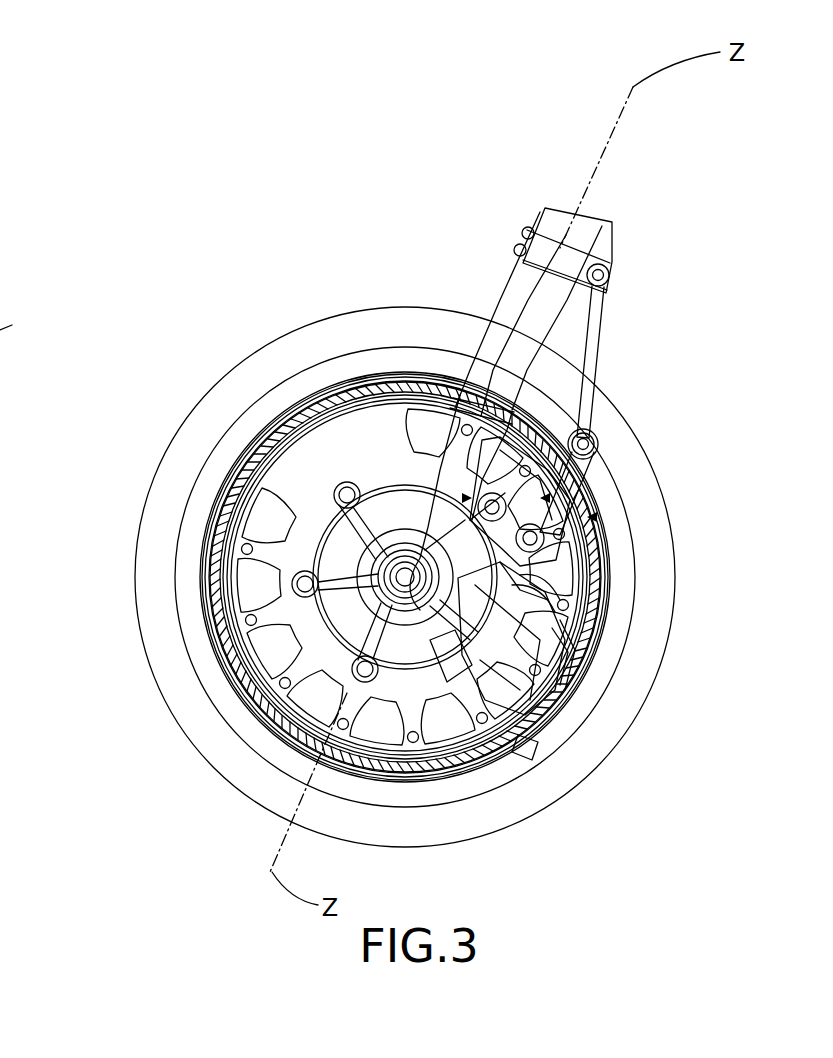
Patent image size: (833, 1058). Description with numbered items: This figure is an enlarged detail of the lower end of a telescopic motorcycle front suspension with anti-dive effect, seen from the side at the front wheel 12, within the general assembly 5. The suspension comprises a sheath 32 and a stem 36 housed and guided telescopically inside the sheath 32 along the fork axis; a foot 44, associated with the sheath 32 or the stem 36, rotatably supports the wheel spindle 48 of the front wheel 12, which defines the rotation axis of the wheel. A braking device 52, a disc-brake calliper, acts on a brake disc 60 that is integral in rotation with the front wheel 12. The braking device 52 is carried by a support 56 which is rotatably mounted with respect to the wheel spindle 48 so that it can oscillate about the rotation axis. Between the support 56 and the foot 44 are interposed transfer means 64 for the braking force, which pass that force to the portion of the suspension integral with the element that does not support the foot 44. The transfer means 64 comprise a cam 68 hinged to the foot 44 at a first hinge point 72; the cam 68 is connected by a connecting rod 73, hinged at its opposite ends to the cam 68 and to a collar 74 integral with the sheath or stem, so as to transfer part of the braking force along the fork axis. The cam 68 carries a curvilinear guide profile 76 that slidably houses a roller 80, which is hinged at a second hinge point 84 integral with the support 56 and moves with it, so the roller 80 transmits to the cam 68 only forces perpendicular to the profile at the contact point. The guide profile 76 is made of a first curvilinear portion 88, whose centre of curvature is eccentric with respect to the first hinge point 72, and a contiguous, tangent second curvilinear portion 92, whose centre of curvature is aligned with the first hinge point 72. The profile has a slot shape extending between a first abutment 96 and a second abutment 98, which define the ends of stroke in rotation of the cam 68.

The front wheel assembly 5 is at (6, 308).
The front wheel 12 is at (257, 783).
The sheath 32 is at (523, 287).
The stem 36 is at (367, 373).
The foot 44 is at (330, 527).
The wheel spindle 48 is at (297, 597).
The braking device 52 is at (573, 697).
The support 56 is at (435, 660).
The brake disc 60 is at (300, 653).
The transfer means 64 is at (588, 517).
The cam 68 is at (472, 358).
The first hinge point 72 is at (287, 407).
The connecting rod 73 is at (603, 303).
The collar 74 is at (557, 262).
The curvilinear guide profile 76 is at (603, 527).
The roller 80 is at (595, 596).
The second hinge point 84 is at (595, 596).
The first curvilinear portion 88 is at (597, 652).
The second curvilinear portion 92 is at (592, 490).
The first abutment 96 is at (590, 400).
The second abutment 98 is at (528, 747).